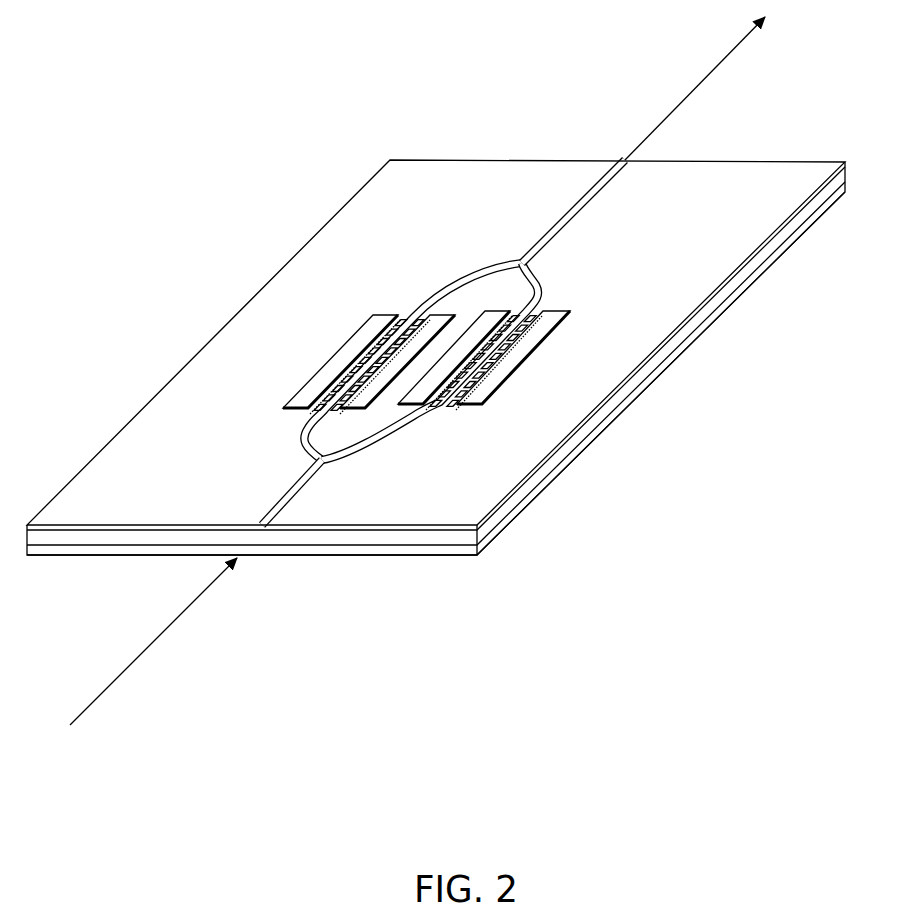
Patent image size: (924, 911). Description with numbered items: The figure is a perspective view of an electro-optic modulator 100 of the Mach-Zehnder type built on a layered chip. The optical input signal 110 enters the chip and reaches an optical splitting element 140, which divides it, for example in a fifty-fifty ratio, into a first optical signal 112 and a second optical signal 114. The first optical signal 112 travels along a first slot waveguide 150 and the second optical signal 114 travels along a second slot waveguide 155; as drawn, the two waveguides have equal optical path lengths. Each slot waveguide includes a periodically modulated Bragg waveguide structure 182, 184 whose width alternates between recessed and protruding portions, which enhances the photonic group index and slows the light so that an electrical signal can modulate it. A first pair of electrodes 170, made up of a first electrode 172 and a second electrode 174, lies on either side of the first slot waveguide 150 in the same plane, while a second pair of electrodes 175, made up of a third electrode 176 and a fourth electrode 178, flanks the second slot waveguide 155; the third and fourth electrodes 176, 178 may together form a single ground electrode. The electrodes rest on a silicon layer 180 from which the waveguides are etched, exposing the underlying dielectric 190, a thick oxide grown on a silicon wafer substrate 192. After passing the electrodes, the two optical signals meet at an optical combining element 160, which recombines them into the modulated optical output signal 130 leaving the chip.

The electro-optic modulator 100 is at (237, 126).
The optical input signal 110 is at (145, 652).
The first optical signal 112 is at (311, 434).
The second optical signal 114 is at (378, 440).
The optical output signal 130 is at (677, 108).
The optical splitting element 140 is at (314, 457).
The first slot waveguide 150 is at (367, 350).
The second slot waveguide 155 is at (541, 311).
The optical combining element 160 is at (514, 255).
The first pair of electrodes 170 is at (302, 403).
The first electrode 172 is at (340, 361).
The second electrode 174 is at (397, 361).
The second pair of electrodes 175 is at (490, 375).
The third electrode 176 is at (454, 357).
The fourth electrode 178 is at (513, 357).
The silicon layer 180 is at (83, 480).
The periodically modulated Bragg waveguide structure 182 is at (337, 408).
The periodically modulated Bragg waveguide structure 184 is at (452, 404).
The dielectric 190 is at (490, 533).
The silicon wafer substrate 192 is at (413, 553).